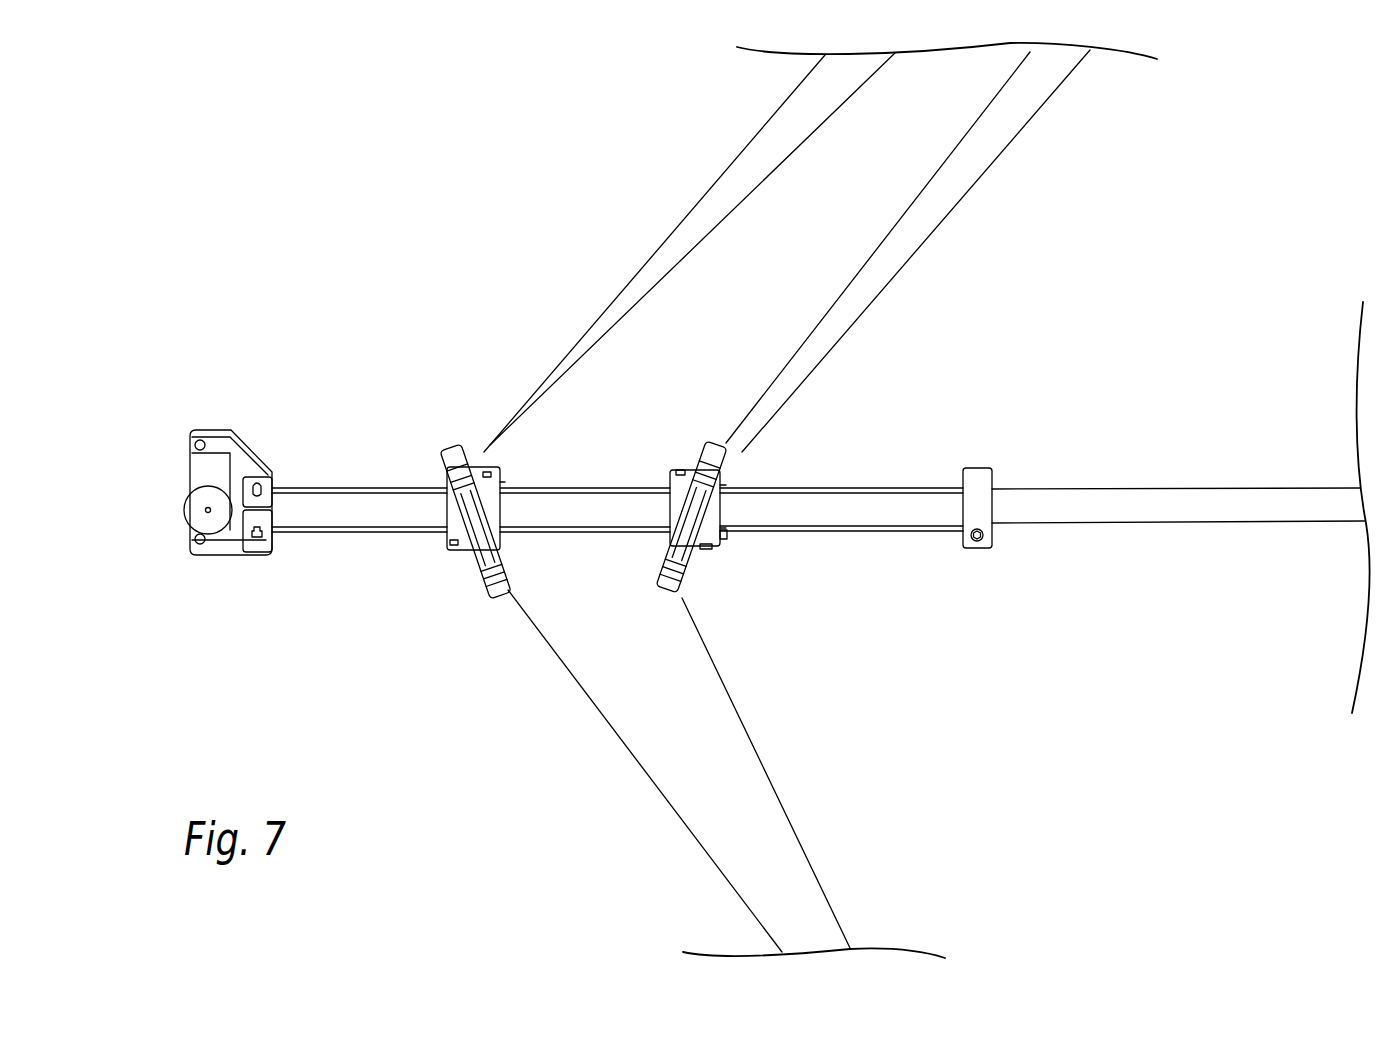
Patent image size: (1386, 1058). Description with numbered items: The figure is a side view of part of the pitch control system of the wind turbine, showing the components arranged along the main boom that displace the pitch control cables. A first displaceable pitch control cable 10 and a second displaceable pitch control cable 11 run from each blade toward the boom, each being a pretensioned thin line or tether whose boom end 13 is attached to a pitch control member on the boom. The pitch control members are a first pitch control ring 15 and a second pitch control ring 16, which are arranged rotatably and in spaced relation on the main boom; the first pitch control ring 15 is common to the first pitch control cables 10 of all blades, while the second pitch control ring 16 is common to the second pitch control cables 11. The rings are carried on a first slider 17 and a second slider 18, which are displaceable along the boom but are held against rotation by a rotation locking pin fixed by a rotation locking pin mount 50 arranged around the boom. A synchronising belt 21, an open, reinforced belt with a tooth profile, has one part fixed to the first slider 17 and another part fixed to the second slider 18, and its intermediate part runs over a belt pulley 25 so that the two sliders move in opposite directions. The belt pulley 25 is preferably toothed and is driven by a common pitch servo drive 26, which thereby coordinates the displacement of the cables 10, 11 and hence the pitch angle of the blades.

The first displaceable pitch control cable 10 is at (758, 130).
The second displaceable pitch control cable 11 is at (985, 106).
The boom end 13 is at (480, 451).
The first pitch control ring 15 is at (483, 557).
The second pitch control ring 16 is at (677, 553).
The first slider 17 is at (460, 532).
The second slider 18 is at (707, 522).
The synchronising belt 21 is at (307, 538).
The belt pulley 25 is at (197, 515).
The common pitch servo drive 26 is at (222, 445).
The rotation locking pin mount 50 is at (975, 488).